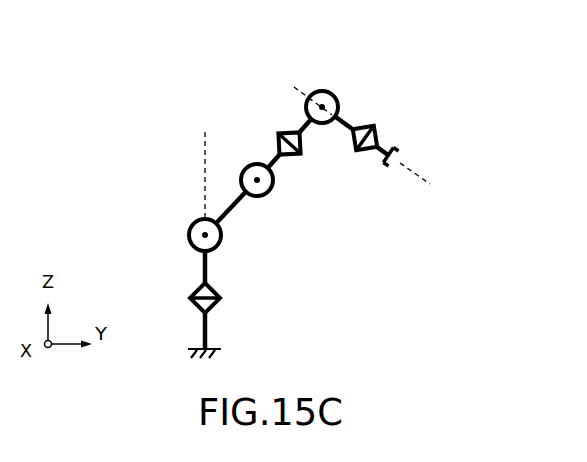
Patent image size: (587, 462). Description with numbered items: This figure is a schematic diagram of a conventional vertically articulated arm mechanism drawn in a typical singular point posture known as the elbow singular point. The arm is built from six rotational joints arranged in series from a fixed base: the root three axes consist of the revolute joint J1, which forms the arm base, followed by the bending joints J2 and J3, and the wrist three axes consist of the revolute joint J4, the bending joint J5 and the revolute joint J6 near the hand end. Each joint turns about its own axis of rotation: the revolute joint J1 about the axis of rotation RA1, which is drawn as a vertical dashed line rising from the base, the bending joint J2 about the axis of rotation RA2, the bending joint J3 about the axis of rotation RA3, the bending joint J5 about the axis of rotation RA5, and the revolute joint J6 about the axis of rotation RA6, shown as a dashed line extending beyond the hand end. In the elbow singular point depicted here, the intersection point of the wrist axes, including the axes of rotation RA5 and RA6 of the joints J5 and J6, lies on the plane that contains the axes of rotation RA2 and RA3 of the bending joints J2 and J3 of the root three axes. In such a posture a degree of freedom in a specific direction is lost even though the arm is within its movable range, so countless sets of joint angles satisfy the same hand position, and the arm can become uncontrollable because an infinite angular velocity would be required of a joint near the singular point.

The revolute joint J1 is at (222, 298).
The bending joint J2 is at (219, 238).
The bending joint J3 is at (270, 190).
The revolute joint J4 is at (273, 132).
The bending joint J5 is at (332, 94).
The revolute joint J6 is at (377, 126).
The axis of rotation RA1 is at (207, 162).
The axis of rotation RA2 is at (203, 236).
The axis of rotation RA3 is at (255, 181).
The axis of rotation RA5 is at (320, 105).
The axis of rotation RA6 is at (435, 189).